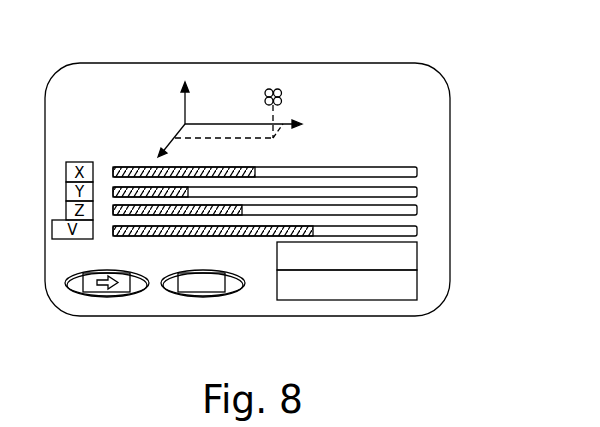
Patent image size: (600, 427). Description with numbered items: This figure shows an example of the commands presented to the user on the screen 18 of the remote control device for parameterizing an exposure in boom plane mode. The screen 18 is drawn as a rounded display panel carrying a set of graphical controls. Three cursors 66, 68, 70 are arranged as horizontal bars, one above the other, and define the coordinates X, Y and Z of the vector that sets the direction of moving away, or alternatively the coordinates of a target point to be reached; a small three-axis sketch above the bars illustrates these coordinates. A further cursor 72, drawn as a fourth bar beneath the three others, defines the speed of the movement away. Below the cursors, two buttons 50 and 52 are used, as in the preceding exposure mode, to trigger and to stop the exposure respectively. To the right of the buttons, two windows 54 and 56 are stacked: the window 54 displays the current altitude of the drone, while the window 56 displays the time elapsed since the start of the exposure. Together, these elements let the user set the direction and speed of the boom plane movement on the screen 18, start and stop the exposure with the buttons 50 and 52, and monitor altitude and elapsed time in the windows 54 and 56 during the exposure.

The screen 18 is at (412, 80).
The button 50 is at (105, 298).
The button 52 is at (202, 298).
The window 54 is at (415, 252).
The window 56 is at (415, 288).
The cursor 66 is at (288, 169).
The cursor 68 is at (308, 192).
The cursor 70 is at (338, 210).
The cursor 72 is at (382, 232).